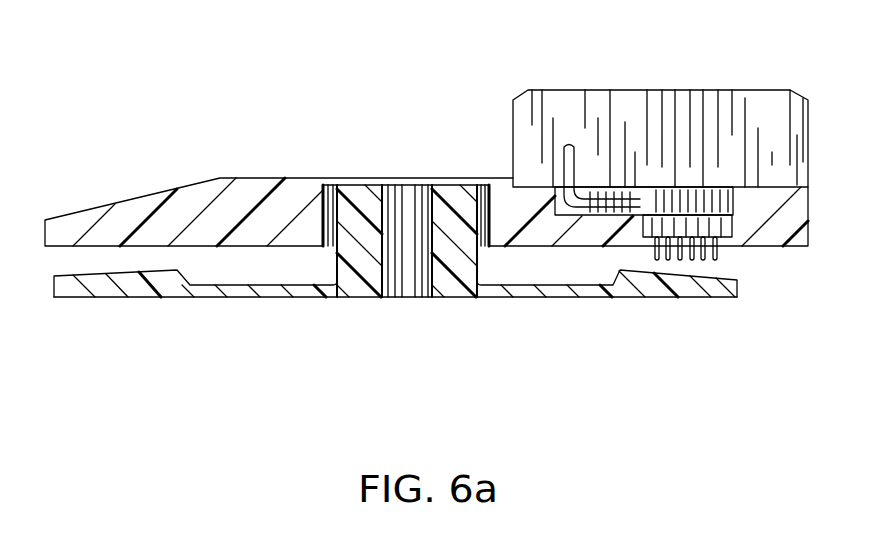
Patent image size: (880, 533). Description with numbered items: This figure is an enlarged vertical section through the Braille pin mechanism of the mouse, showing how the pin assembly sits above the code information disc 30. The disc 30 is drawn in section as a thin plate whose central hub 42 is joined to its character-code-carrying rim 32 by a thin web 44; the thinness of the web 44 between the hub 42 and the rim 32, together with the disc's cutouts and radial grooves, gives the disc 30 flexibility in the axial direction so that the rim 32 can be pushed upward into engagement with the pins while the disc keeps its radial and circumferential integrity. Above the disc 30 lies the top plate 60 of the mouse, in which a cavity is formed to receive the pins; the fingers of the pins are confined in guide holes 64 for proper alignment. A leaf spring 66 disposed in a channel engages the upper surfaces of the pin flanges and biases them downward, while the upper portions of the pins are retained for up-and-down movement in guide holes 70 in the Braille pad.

The code information disc 30 is at (277, 330).
The rim 32 is at (128, 282).
The hub 42 is at (448, 282).
The web 44 is at (565, 290).
The top plate 60 is at (170, 177).
The guide holes 64 is at (723, 245).
The leaf spring 66 is at (613, 187).
The guide holes 70 is at (767, 107).